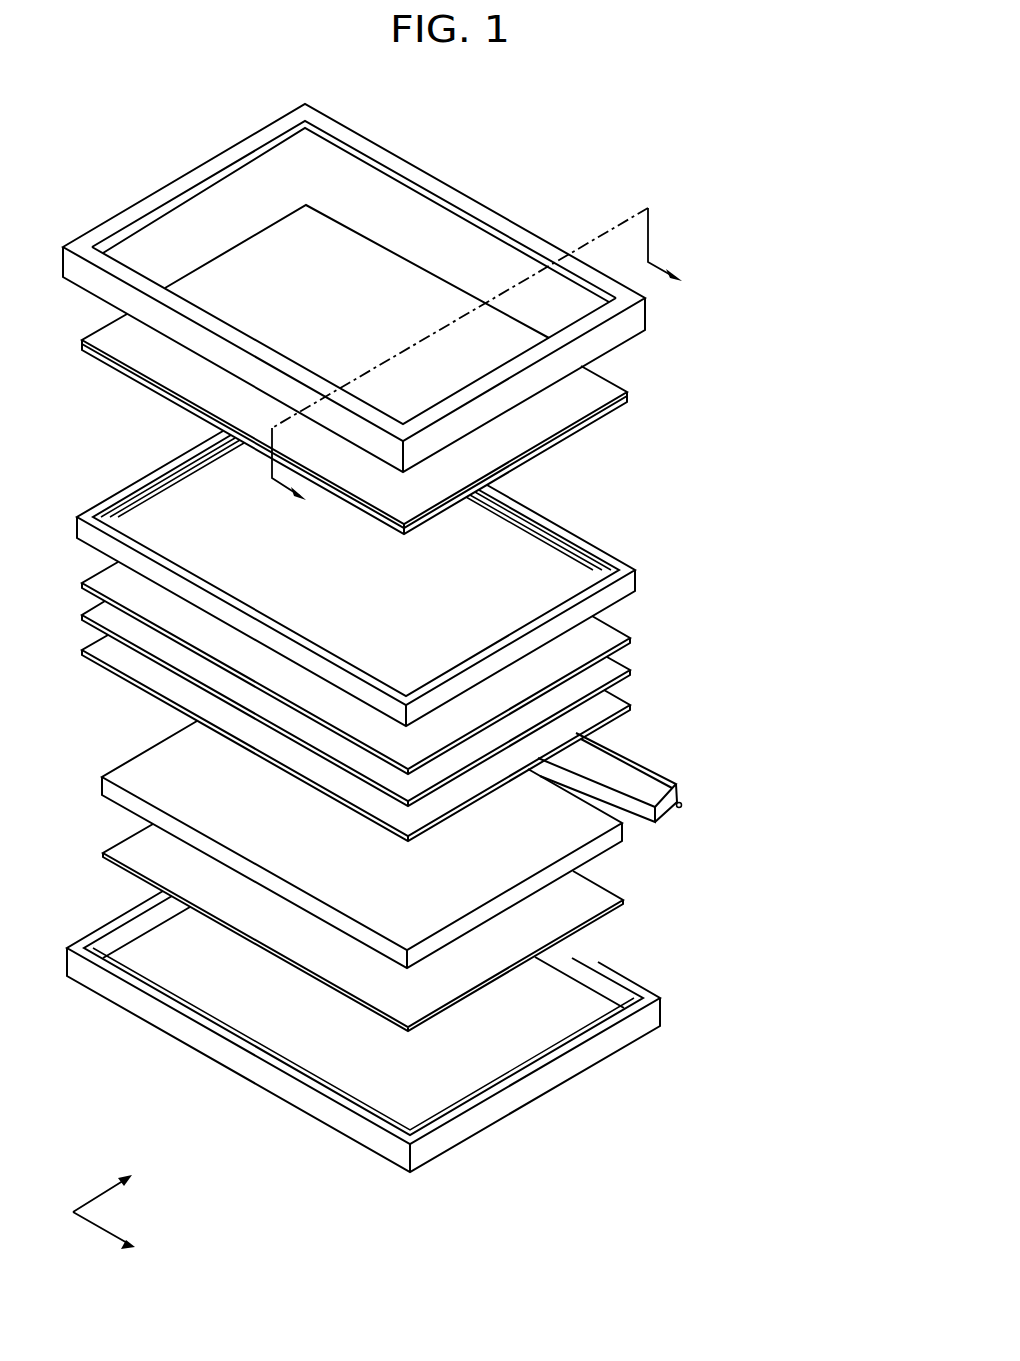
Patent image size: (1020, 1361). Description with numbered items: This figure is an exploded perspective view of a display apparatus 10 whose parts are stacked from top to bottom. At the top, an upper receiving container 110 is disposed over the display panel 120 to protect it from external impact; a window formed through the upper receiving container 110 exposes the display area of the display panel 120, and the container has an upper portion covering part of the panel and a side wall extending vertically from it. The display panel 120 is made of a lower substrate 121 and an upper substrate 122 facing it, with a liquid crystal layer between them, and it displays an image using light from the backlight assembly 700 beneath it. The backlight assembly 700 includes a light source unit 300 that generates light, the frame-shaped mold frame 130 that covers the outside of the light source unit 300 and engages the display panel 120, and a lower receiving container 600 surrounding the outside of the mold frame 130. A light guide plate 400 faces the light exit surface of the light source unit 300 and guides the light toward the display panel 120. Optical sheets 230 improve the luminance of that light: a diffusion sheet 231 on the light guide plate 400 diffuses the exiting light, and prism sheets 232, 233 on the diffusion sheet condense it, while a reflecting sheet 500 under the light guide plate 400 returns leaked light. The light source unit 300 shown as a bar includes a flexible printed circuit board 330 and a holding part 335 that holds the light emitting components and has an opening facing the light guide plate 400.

The display apparatus 10 is at (618, 138).
The upper receiving container 110 is at (640, 315).
The display panel 120 is at (402, 424).
The lower substrate 121 is at (585, 408).
The upper substrate 122 is at (590, 383).
The mold frame 130 is at (630, 582).
The optical sheets 230 is at (409, 701).
The diffusion sheet 231 is at (689, 625).
The prism sheet 232 is at (605, 660).
The prism sheet 233 is at (605, 626).
The light source unit 300 is at (662, 786).
The flexible printed circuit board 330 is at (681, 807).
The holding part 335 is at (658, 763).
The light guide plate 400 is at (623, 824).
The reflecting sheet 500 is at (410, 1002).
The lower receiving container 600 is at (402, 1031).
The backlight assembly 700 is at (453, 867).